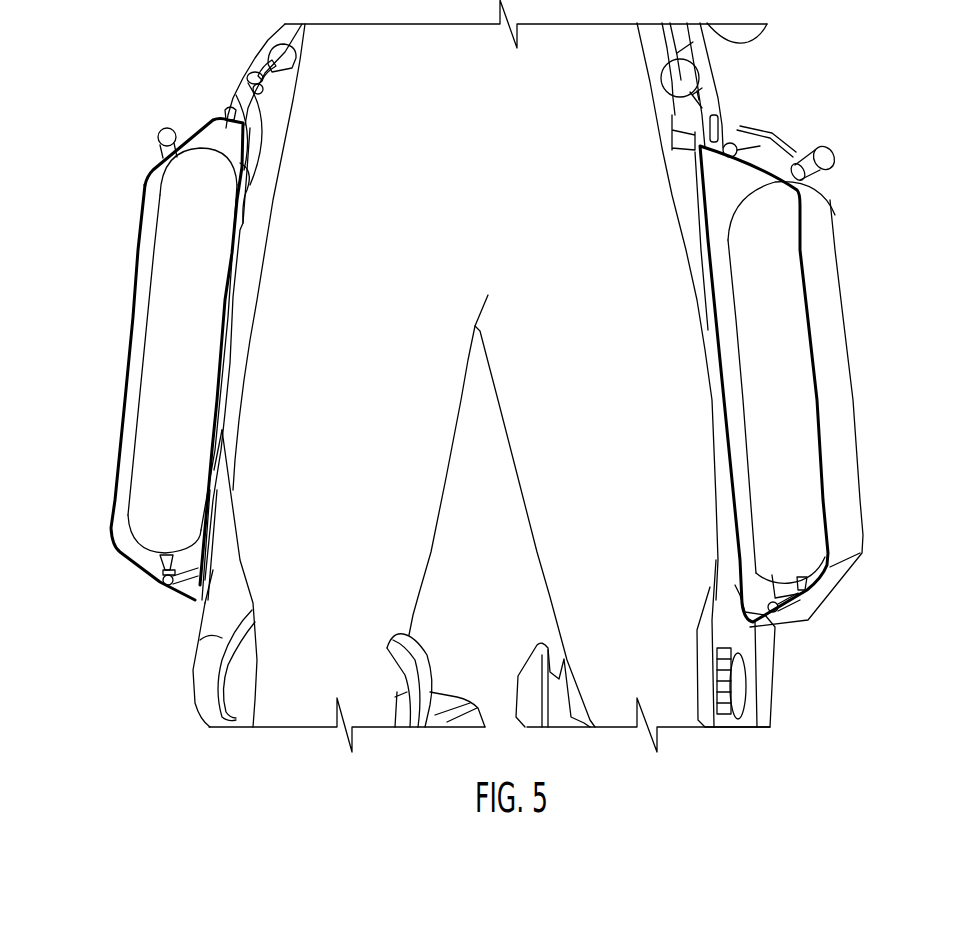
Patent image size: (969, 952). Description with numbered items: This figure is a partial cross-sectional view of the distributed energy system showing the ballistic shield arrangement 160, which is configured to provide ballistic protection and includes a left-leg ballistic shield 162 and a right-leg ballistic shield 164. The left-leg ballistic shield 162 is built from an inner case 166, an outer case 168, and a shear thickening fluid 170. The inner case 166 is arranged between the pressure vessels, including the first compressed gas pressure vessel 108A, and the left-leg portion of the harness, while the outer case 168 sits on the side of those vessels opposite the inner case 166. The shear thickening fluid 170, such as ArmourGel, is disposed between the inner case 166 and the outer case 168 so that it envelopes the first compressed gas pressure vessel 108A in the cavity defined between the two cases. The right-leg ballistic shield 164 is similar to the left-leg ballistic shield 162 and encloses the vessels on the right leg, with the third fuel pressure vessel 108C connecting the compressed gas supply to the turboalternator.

The ballistic shield arrangement 160 is at (196, 825).
The left-leg ballistic shield 162 is at (114, 571).
The right-leg ballistic shield 164 is at (826, 610).
The inner case 166 is at (212, 572).
The outer case 168 is at (150, 303).
The shear thickening fluid 170 is at (158, 568).
The first compressed gas pressure vessel 108A is at (147, 463).
The third fuel pressure vessel 108C is at (778, 365).